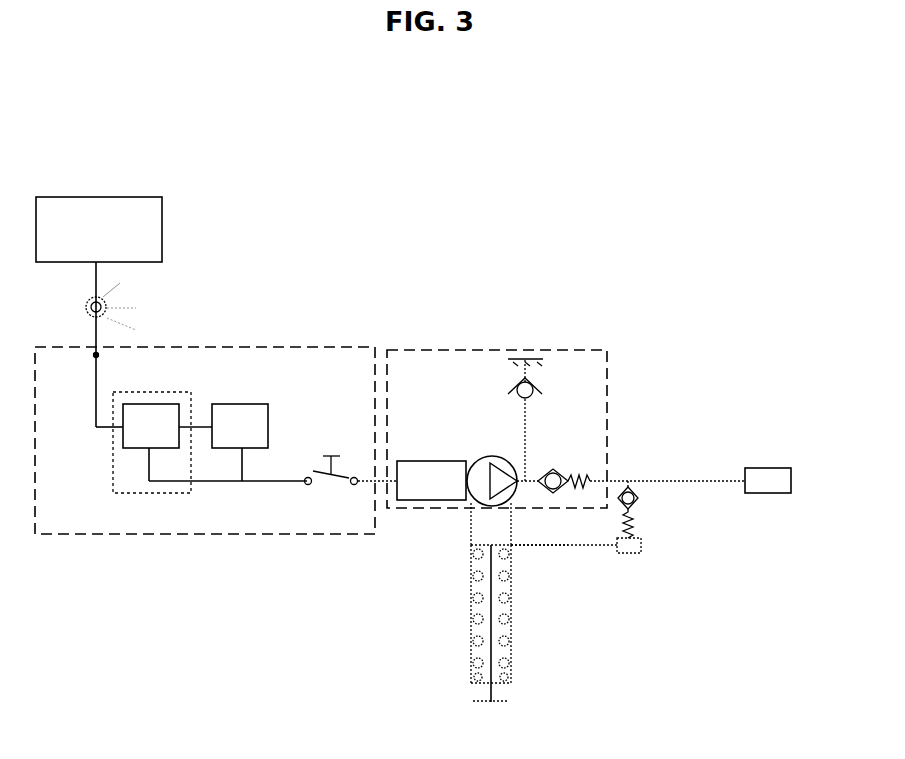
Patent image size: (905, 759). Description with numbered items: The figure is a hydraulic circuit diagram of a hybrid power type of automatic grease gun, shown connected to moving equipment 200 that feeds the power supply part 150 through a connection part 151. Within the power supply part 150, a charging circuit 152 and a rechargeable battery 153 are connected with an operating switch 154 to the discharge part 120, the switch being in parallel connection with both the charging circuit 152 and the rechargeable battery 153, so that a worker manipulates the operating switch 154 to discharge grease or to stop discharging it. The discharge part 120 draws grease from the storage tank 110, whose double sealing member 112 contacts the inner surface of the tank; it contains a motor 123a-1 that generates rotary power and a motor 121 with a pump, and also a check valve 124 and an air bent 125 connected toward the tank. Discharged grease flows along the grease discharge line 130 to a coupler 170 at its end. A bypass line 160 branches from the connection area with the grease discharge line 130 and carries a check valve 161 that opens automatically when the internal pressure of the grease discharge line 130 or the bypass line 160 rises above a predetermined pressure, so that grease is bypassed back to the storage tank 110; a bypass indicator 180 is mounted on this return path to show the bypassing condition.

The moving equipment 200 is at (142, 197).
The power supply part 150 is at (285, 347).
The connection part 151 is at (94, 356).
The charging circuit 152 is at (138, 452).
The rechargeable battery 153 is at (265, 403).
The operating switch 154 is at (330, 478).
The discharge part 120 is at (567, 349).
The motor 123a-1 is at (433, 458).
The motor 121 is at (483, 456).
The check valve 124 is at (561, 464).
The air bent 125 is at (528, 416).
The grease discharge line 130 is at (680, 479).
The coupler 170 is at (788, 467).
The check valve 161 is at (645, 502).
The bypass indicator 180 is at (641, 545).
The double sealing member 112 is at (472, 547).
The storage tank 110 is at (513, 637).
The bypass line 160 is at (568, 545).